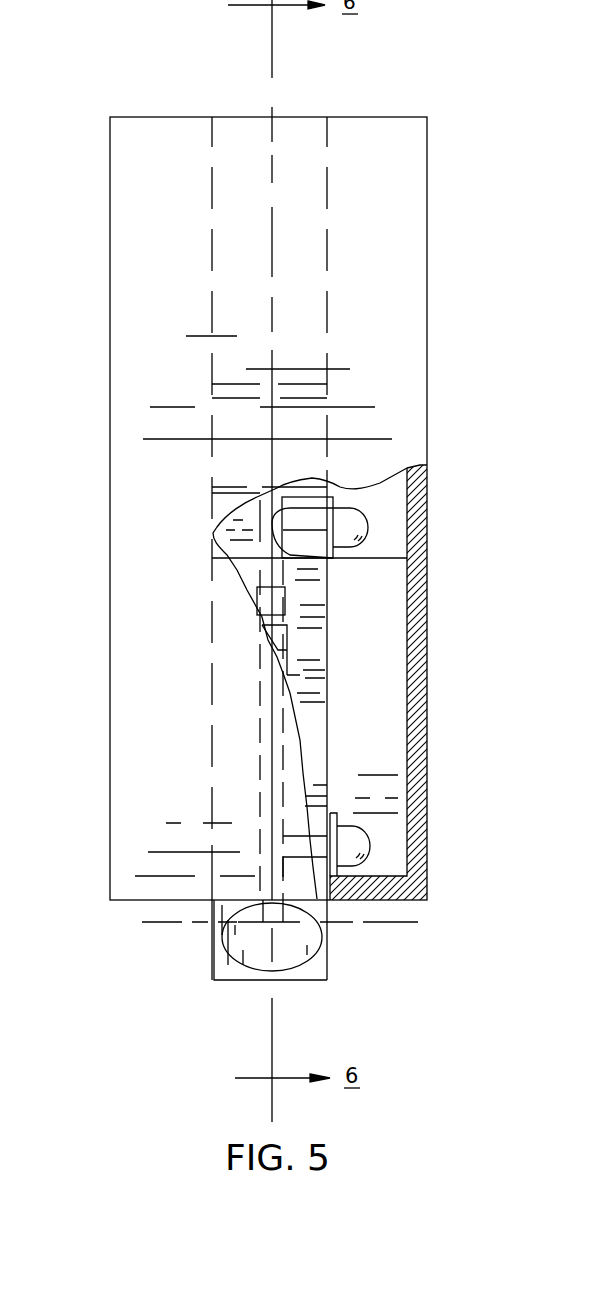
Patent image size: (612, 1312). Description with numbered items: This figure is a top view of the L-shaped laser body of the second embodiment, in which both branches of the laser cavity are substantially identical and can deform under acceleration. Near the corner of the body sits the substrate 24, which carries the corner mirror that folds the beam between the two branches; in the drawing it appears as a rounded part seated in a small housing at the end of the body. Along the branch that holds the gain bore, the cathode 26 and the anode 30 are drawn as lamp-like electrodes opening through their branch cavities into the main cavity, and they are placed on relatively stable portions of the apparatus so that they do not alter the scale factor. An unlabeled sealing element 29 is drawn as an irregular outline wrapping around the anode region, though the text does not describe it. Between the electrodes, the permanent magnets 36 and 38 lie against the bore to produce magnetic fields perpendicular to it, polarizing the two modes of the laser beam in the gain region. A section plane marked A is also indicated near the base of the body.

The substrate 24 is at (305, 955).
The cathode 26 is at (370, 843).
The gasket 29 is at (313, 521).
The anode 30 is at (370, 523).
The permanent magnet 36 is at (277, 603).
The permanent magnet 38 is at (280, 650).
The section plane A is at (386, 923).